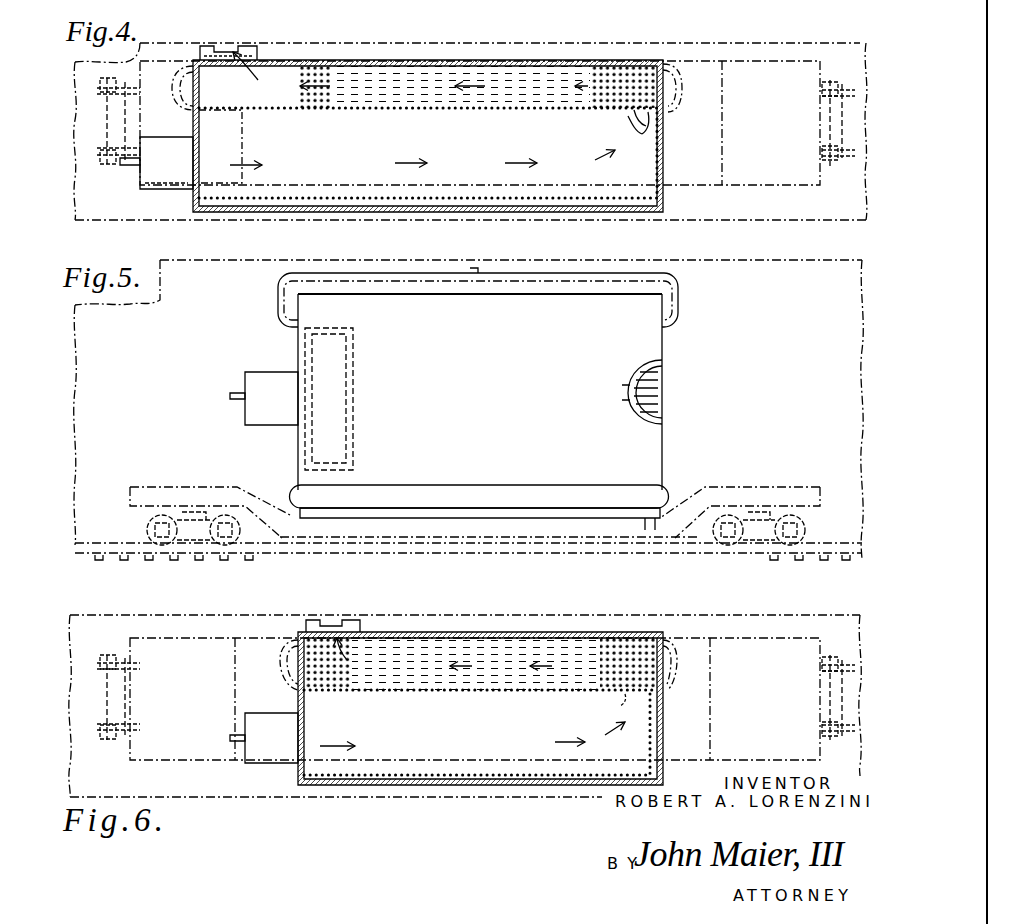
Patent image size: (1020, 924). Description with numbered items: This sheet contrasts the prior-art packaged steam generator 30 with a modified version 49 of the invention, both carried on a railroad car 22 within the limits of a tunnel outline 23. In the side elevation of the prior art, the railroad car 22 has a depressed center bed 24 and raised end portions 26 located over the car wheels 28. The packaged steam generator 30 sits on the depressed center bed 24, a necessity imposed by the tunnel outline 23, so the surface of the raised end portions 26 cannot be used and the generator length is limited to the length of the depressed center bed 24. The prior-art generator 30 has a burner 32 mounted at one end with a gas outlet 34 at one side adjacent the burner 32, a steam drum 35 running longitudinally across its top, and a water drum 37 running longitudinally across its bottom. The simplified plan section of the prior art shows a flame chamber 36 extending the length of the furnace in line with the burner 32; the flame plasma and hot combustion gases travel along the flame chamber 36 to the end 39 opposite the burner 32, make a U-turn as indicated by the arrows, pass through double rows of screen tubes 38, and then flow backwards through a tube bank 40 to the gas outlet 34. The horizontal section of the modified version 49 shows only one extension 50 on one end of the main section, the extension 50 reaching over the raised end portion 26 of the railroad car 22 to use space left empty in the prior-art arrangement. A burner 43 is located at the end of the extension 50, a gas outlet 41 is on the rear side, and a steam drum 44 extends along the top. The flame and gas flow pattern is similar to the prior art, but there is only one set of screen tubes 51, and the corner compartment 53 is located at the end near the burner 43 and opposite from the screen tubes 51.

In FIG. 4, the railroad car 22 is at (476, 92).
In FIG. 5, the railroad car 22 is at (512, 542).
In FIG. 6, the railroad car 22 is at (262, 638).
In FIG. 4, the tunnel outline 23 is at (850, 40).
In FIG. 5, the tunnel outline 23 is at (720, 262).
In FIG. 6, the tunnel outline 23 is at (465, 706).
In FIG. 4, the depressed center bed 24 is at (615, 5).
In FIG. 5, the depressed center bed 24 is at (587, 530).
In FIG. 5, the raised end portions 26 is at (158, 487).
In FIG. 6, the raised end portions 26 is at (172, 638).
In FIG. 5, the car wheels 28 is at (146, 526).
In FIG. 5, the packaged steam generator 30 is at (665, 377).
In FIG. 6, the packaged steam generator 30 is at (456, 631).
In FIG. 4, the burner 32 is at (122, 164).
In FIG. 5, the burner 32 is at (232, 395).
In FIG. 6, the burner 32 is at (262, 754).
In FIG. 5, the gas outlet 34 is at (353, 382).
In FIG. 6, the gas outlet 34 is at (337, 636).
In FIG. 5, the steam drum 35 is at (517, 322).
In FIG. 6, the steam drum 35 is at (622, 648).
In FIG. 6, the flame chamber 36 is at (534, 757).
In FIG. 5, the water drum 37 is at (498, 487).
In FIG. 5, the screen tubes 38 is at (630, 390).
In FIG. 6, the screen tubes 38 is at (645, 690).
In FIG. 5, the end opposite the burner 39 is at (660, 447).
In FIG. 6, the end opposite the burner 39 is at (660, 706).
In FIG. 6, the tube bank 40 is at (356, 666).
In FIG. 4, the gas outlet 41 is at (214, 50).
In FIG. 4, the burner 43 is at (143, 180).
In FIG. 5, the burner 43 is at (258, 409).
In FIG. 4, the steam drum 44 is at (676, 88).
In FIG. 4, the modified version 49 is at (666, 139).
In FIG. 4, the extension 50 is at (196, 126).
In FIG. 4, the screen tubes 51 is at (652, 130).
In FIG. 4, the corner compartment 53 is at (232, 91).